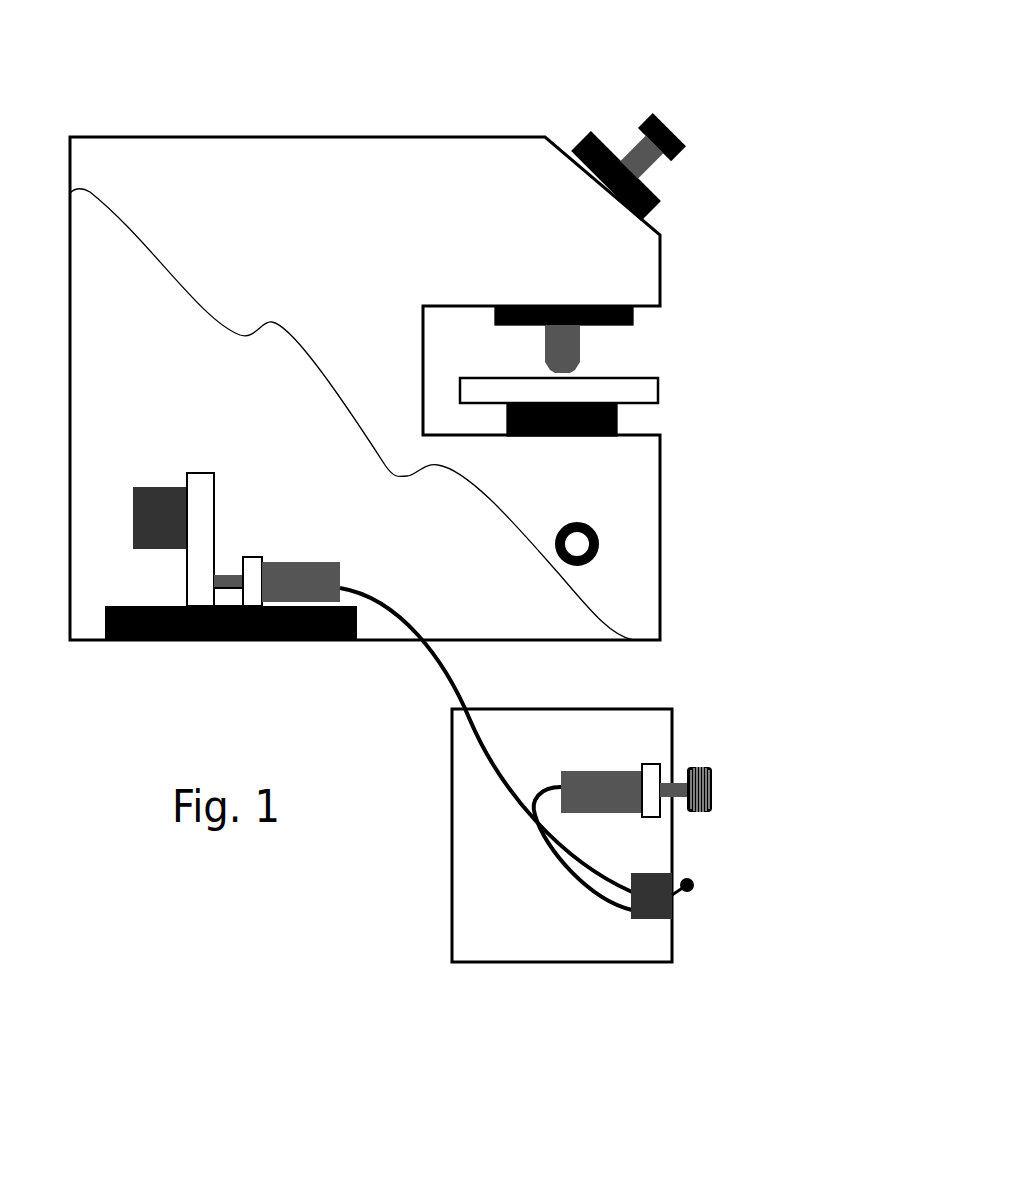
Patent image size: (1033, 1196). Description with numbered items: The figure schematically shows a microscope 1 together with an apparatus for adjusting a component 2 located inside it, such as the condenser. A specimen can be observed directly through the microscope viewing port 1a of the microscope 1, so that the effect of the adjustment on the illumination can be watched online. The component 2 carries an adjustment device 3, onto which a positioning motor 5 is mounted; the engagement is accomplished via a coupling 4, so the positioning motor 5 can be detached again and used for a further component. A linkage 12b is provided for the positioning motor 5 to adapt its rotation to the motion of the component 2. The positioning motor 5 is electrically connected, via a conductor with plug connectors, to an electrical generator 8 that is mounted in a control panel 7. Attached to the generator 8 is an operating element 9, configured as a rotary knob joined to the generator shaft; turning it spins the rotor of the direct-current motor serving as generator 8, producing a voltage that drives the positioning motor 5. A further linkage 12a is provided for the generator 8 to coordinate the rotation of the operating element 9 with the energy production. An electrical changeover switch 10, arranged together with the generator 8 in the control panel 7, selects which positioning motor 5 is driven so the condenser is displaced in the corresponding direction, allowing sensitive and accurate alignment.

The microscope 1 is at (297, 157).
The microscope viewing port 1a is at (620, 128).
The component 2 is at (142, 493).
The adjustment device 3 is at (200, 478).
The coupling 4 is at (225, 578).
The linkage 12b is at (257, 568).
The positioning motor 5 is at (317, 585).
The control panel 7 is at (545, 948).
The electrical generator 8 is at (573, 787).
The linkage 12a is at (650, 780).
The operating element 9 is at (703, 807).
The electrical changeover switch 10 is at (655, 920).